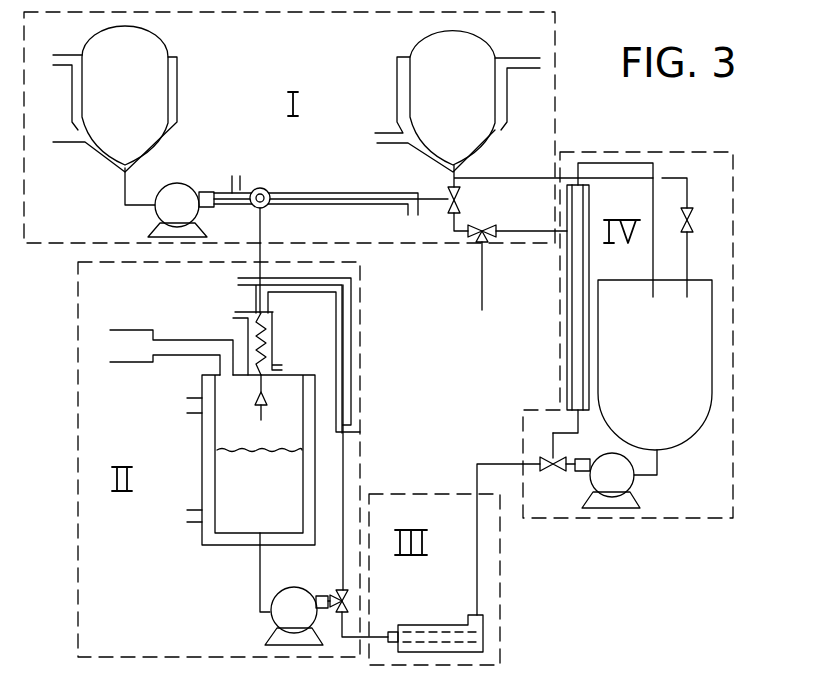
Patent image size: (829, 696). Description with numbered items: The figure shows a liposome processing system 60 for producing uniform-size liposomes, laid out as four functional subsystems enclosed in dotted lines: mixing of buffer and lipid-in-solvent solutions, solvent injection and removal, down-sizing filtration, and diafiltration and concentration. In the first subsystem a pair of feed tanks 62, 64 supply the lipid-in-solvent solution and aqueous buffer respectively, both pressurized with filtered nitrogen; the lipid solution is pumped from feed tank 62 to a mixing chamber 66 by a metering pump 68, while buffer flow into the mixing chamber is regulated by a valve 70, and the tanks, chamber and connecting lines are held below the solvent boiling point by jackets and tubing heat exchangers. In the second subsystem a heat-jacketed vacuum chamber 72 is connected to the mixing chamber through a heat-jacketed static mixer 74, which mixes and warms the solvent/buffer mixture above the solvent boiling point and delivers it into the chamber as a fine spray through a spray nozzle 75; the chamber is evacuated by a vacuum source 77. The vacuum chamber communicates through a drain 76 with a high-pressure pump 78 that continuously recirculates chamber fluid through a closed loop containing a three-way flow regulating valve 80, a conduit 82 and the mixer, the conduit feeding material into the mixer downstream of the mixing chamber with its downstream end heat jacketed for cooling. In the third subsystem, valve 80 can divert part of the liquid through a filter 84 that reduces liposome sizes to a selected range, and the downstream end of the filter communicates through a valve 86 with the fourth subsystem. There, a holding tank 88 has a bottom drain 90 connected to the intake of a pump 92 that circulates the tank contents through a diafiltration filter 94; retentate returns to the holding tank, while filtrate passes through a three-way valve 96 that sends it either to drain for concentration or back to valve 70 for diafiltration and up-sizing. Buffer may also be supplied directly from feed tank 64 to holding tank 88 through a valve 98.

The system 60 is at (568, 142).
The feed tank 62 is at (156, 46).
The feed tank 64 is at (424, 46).
The mixing chamber 66 is at (267, 190).
The metering pump 68 is at (181, 196).
The valve 70 is at (461, 200).
The vacuum chamber 72 is at (232, 530).
The static mixer 74 is at (268, 336).
The spray nozzle 75 is at (258, 410).
The drain 76 is at (261, 532).
The vacuum source 77 is at (128, 365).
The high-pressure pump 78 is at (292, 598).
The three-way flow regulating valve 80 is at (353, 601).
The conduit 82 is at (348, 480).
The filter 84 is at (463, 652).
The valve 86 is at (552, 470).
The holding tank 88 is at (713, 380).
The bottom drain 90 is at (661, 452).
The pump 92 is at (626, 483).
The diafiltration filter 94 is at (567, 356).
The three-way valve 96 is at (490, 240).
The valve 98 is at (690, 225).